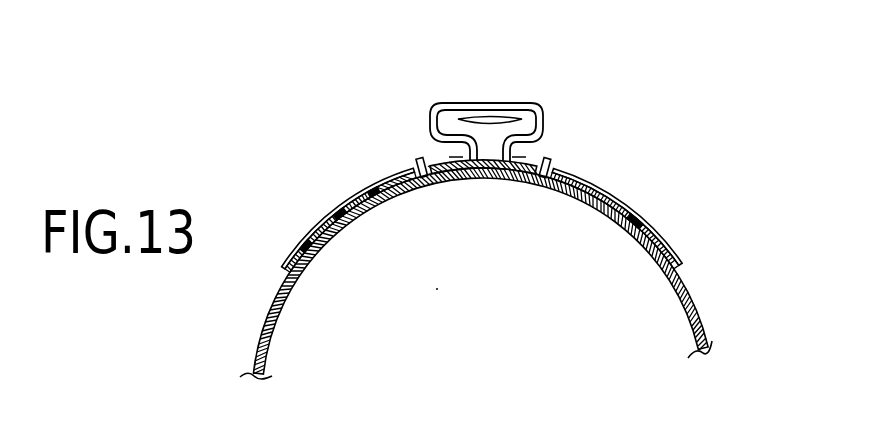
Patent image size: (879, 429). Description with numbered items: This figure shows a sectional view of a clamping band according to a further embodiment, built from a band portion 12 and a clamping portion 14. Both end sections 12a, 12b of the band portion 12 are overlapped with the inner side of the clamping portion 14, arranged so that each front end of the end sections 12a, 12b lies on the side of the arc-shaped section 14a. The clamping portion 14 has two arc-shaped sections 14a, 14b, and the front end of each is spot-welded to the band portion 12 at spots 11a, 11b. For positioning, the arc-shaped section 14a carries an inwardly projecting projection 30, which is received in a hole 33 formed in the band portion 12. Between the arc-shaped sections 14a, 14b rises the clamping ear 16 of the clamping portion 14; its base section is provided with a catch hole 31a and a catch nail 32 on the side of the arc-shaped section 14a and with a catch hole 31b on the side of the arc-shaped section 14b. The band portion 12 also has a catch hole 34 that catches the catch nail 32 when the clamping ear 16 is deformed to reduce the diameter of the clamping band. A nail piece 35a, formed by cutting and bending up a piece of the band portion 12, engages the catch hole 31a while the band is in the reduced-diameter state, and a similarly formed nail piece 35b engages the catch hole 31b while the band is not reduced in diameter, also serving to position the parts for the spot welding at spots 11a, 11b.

The band portion 12 is at (694, 304).
The end section 12a is at (338, 232).
The end section 12b is at (620, 226).
The spot 11a is at (304, 241).
The spot 11b is at (634, 212).
The clamping portion 14 is at (599, 189).
The arc-shaped section 14a is at (317, 227).
The arc-shaped section 14b is at (670, 242).
The clamping ear 16 is at (504, 103).
The projection 30 is at (356, 221).
The catch hole 31a is at (417, 168).
The catch hole 31b is at (551, 162).
The catch nail 32 is at (386, 211).
The hole 33 is at (370, 217).
The catch hole 34 is at (397, 204).
The nail piece 35a is at (421, 157).
The nail piece 35b is at (548, 179).